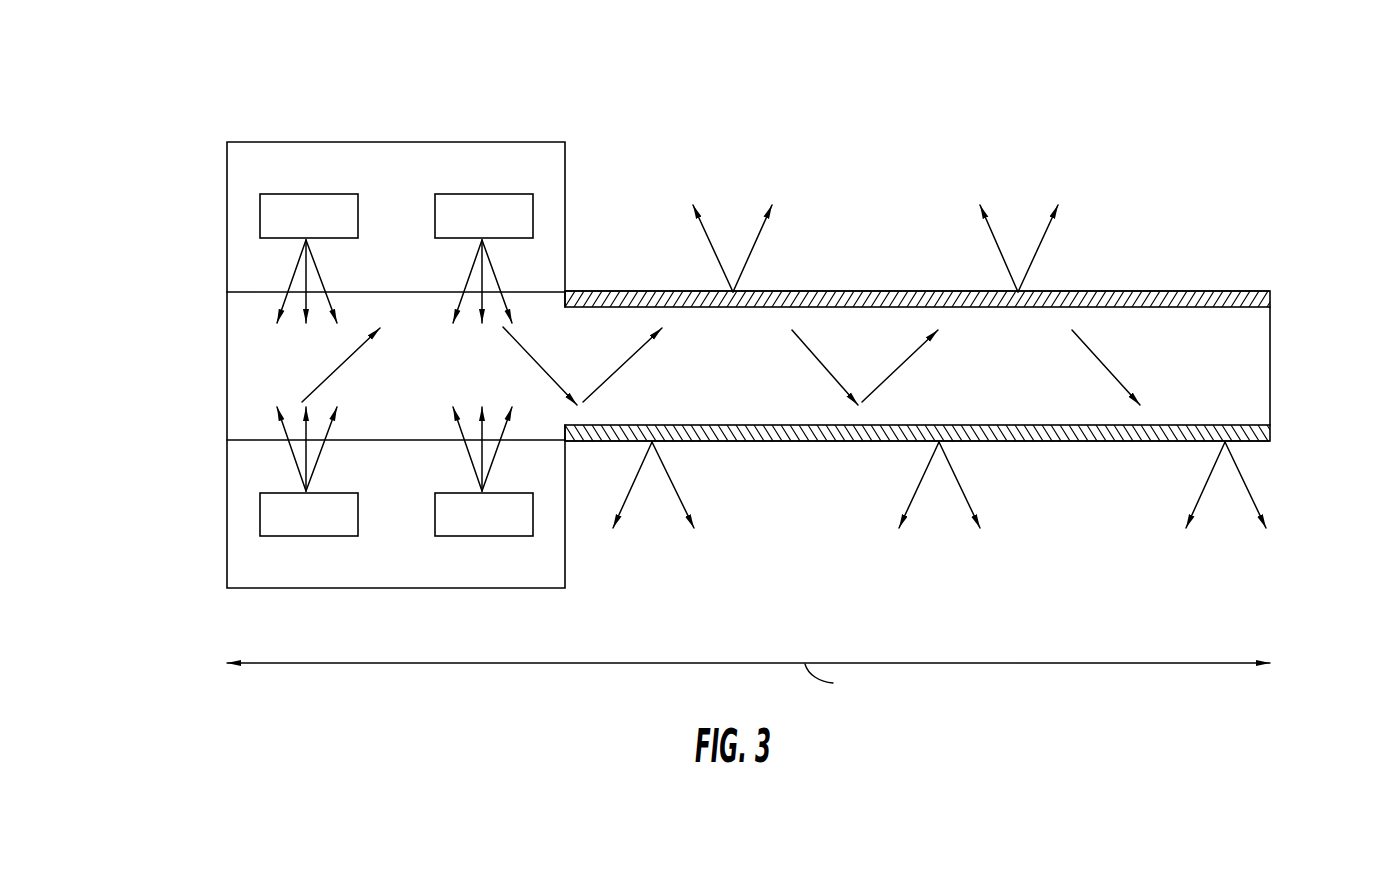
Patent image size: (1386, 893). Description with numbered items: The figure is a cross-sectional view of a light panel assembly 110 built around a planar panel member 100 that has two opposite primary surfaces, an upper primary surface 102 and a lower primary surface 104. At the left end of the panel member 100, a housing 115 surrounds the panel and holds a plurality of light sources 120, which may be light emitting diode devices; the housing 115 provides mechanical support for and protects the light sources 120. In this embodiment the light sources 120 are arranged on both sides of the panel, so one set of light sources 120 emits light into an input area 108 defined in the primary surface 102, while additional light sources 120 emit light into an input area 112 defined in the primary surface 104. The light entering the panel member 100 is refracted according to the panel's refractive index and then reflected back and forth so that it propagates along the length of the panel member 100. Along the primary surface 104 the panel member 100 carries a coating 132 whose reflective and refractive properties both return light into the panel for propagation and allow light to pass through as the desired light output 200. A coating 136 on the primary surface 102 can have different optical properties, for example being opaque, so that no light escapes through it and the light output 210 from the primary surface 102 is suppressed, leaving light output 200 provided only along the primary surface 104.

The panel member 100 is at (960, 376).
The primary surface 102 is at (797, 292).
The primary surface 104 is at (777, 442).
The input area 108 is at (355, 312).
The light panel assembly 110 is at (1118, 85).
The input area 112 is at (370, 402).
The housing 115 is at (371, 142).
The light sources 120 is at (260, 209).
The coating 132 is at (1271, 433).
The coating 136 is at (1143, 299).
The light output 200 is at (780, 590).
The light output 210 is at (875, 113).